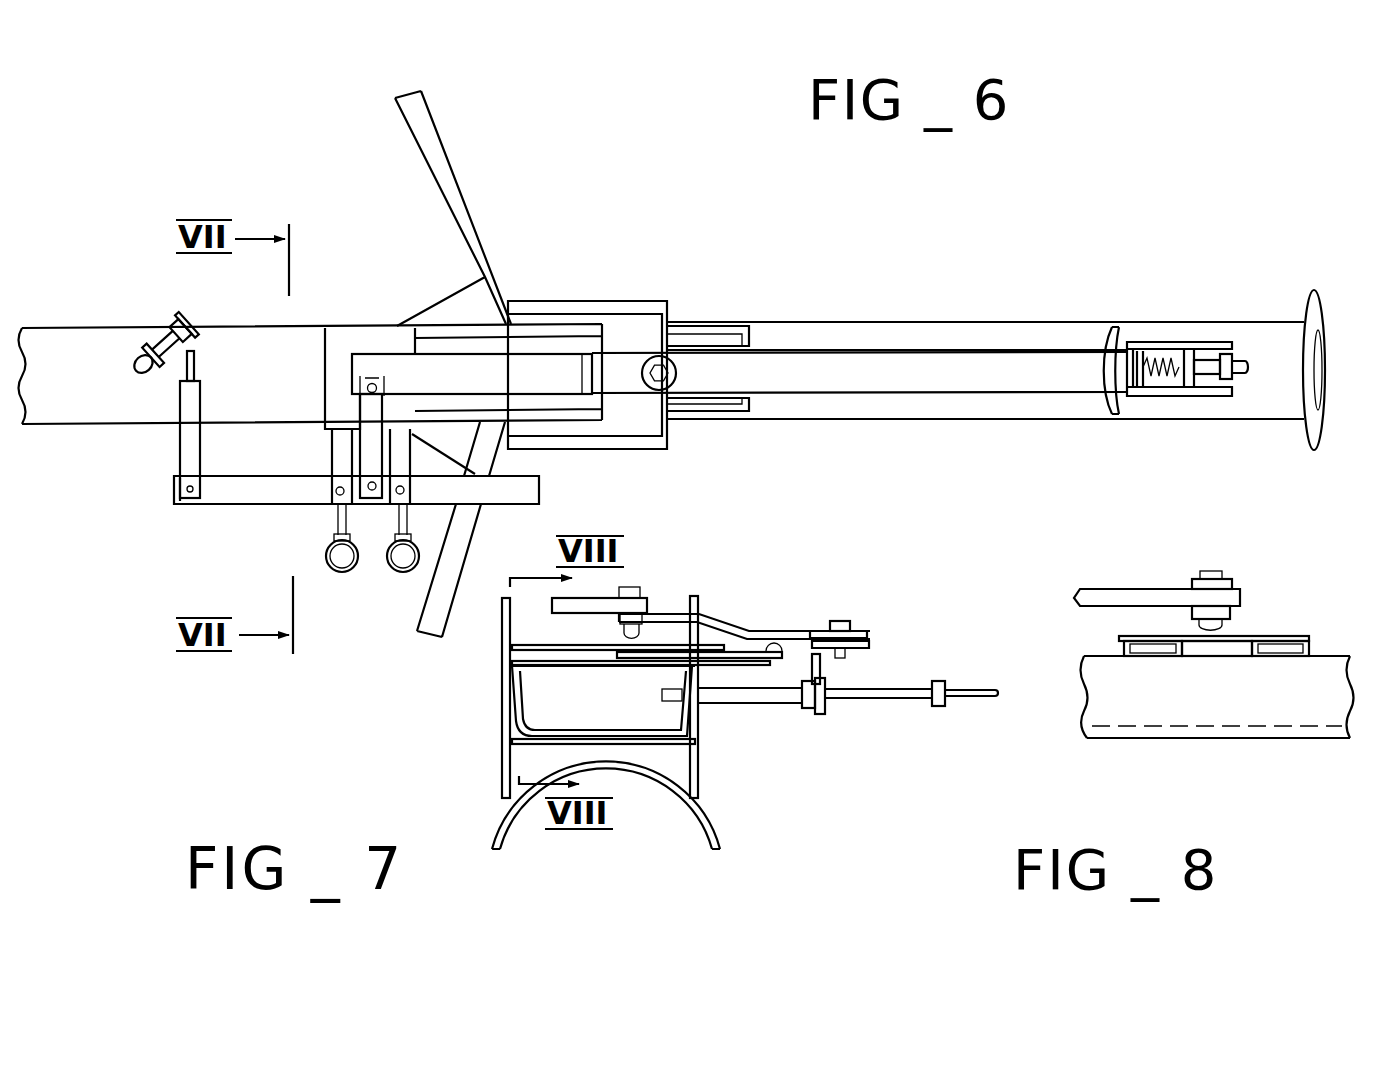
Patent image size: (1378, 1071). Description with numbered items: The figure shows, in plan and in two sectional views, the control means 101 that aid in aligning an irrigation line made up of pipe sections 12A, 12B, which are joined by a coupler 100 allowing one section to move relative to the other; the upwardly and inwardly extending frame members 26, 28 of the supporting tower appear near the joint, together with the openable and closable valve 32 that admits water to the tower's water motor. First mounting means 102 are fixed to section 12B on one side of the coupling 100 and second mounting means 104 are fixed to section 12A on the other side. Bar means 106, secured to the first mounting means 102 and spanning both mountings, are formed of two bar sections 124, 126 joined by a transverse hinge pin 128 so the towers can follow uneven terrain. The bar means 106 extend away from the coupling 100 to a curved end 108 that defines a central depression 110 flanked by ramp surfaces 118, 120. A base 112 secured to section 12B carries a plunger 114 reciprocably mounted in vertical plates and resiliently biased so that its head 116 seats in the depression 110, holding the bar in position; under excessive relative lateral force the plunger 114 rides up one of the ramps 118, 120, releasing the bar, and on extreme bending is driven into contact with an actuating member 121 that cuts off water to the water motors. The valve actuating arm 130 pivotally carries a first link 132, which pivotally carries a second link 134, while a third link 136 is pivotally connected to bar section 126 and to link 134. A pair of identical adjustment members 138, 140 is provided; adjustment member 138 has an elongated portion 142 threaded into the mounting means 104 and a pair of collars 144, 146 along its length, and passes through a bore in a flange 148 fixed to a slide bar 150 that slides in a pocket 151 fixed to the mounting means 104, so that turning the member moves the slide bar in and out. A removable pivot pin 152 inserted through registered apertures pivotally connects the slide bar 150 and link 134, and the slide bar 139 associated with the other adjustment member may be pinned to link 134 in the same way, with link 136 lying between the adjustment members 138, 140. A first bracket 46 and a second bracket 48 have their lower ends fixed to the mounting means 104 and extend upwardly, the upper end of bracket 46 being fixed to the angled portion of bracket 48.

In FIG. 6, the irrigation line section 12A is at (305, 324).
In FIG. 7, the irrigation line section 12A is at (708, 820).
In FIG. 6, the irrigation line section 12B is at (973, 320).
In FIG. 6, the frame member 26 is at (422, 136).
In FIG. 6, the frame member 28 is at (468, 532).
In FIG. 6, the valve 32 is at (176, 322).
In FIG. 7, the first bracket 46 is at (698, 600).
In FIG. 7, the second bracket 48 is at (498, 684).
In FIG. 6, the coupler 100 is at (592, 298).
In FIG. 6, the control means 101 is at (790, 320).
In FIG. 7, the control means 101 is at (486, 638).
In FIG. 6, the first mounting means 102 is at (735, 328).
In FIG. 6, the second mounting means 104 is at (333, 397).
In FIG. 7, the second mounting means 104 is at (503, 735).
In FIG. 8, the second mounting means 104 is at (1262, 735).
In FIG. 6, the bar means 106 is at (836, 346).
In FIG. 7, the bar means 106 is at (599, 594).
In FIG. 8, the bar means 106 is at (1097, 586).
In FIG. 6, the curved end 108 is at (1112, 330).
In FIG. 6, the central depression 110 is at (1122, 362).
In FIG. 6, the base 112 is at (1200, 398).
In FIG. 6, the plunger 114 is at (1140, 390).
In FIG. 6, the head 116 is at (1108, 368).
In FIG. 6, the ramp surface 118 is at (1124, 352).
In FIG. 6, the ramp surface 120 is at (1112, 413).
In FIG. 6, the actuating member 121 is at (1229, 378).
In FIG. 6, the bar section 124 is at (893, 375).
In FIG. 6, the bar section 126 is at (408, 371).
In FIG. 7, the bar section 126 is at (591, 614).
In FIG. 8, the bar section 126 is at (1143, 588).
In FIG. 6, the hinge pin 128 is at (600, 360).
In FIG. 6, the valve actuating arm 130 is at (201, 358).
In FIG. 6, the first link 132 is at (178, 451).
In FIG. 6, the second link 134 is at (215, 508).
In FIG. 7, the second link 134 is at (868, 637).
In FIG. 6, the third link 136 is at (378, 501).
In FIG. 7, the third link 136 is at (732, 626).
In FIG. 8, the third link 136 is at (1233, 608).
In FIG. 6, the adjustment member 138 is at (321, 552).
In FIG. 7, the adjustment member 138 is at (975, 700).
In FIG. 6, the slide bar 139 is at (410, 477).
In FIG. 7, the slide bar 139 is at (641, 663).
In FIG. 8, the slide bar 139 is at (1120, 636).
In FIG. 6, the adjustment member 140 is at (395, 574).
In FIG. 7, the elongated portion 142 is at (752, 706).
In FIG. 7, the collar 144 is at (806, 708).
In FIG. 7, the collar 146 is at (822, 710).
In FIG. 7, the flange 148 is at (820, 667).
In FIG. 6, the slide bar 150 is at (337, 449).
In FIG. 7, the slide bar 150 is at (783, 650).
In FIG. 8, the slide bar 150 is at (1270, 637).
In FIG. 7, the pocket 151 is at (666, 646).
In FIG. 8, the pocket 151 is at (1309, 645).
In FIG. 6, the removable pivot pin 152 is at (330, 497).
In FIG. 7, the removable pivot pin 152 is at (849, 620).